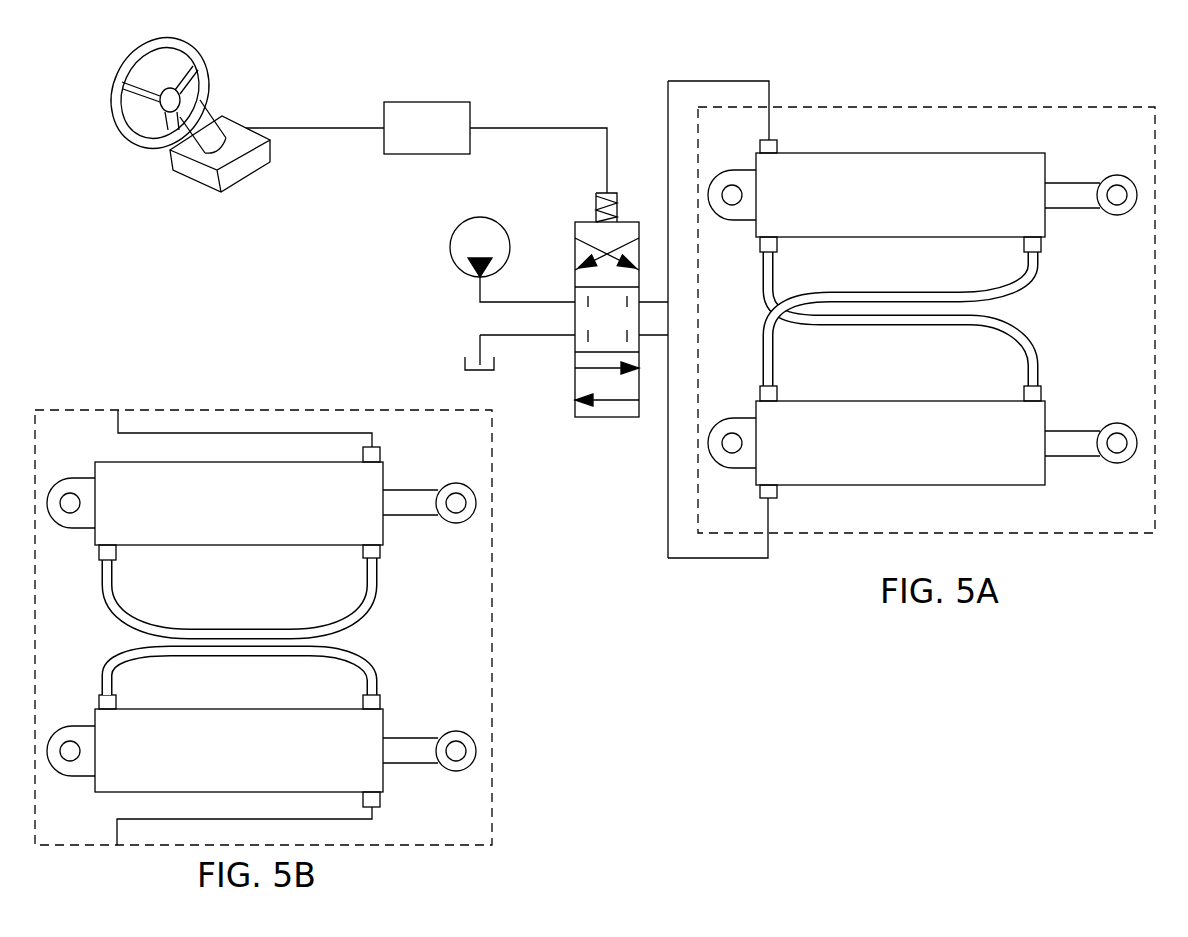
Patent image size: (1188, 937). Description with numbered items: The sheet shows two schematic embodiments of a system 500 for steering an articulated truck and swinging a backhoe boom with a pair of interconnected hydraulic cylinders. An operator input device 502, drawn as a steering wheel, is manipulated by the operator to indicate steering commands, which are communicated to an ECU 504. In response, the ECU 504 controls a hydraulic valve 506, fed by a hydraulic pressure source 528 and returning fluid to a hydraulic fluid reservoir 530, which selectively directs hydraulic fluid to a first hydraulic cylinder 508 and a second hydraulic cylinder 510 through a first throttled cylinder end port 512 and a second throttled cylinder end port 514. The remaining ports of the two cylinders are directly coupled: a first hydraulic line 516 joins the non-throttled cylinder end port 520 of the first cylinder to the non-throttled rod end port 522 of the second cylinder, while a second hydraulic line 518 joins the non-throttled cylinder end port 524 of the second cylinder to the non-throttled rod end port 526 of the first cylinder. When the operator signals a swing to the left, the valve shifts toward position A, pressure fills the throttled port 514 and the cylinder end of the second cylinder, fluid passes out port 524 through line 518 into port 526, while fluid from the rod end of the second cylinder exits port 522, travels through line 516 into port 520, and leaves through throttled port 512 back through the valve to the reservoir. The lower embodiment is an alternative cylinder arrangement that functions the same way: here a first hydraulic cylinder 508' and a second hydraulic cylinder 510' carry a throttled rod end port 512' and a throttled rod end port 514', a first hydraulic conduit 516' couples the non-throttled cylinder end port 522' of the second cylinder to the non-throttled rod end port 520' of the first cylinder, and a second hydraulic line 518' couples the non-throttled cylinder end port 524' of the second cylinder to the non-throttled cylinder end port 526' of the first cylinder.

In FIG. 5A, the system 500 is at (903, 68).
In FIG. 5A, the operator input device 502 is at (118, 122).
In FIG. 5A, the ECU 504 is at (418, 102).
In FIG. 5A, the hydraulic valve 506 is at (598, 418).
In FIG. 5A, the first hydraulic cylinder 508 is at (922, 175).
In FIG. 5A, the second hydraulic cylinder 510 is at (922, 465).
In FIG. 5A, the first throttled cylinder end port 512 is at (825, 133).
In FIG. 5A, the second throttled cylinder end port 514 is at (819, 508).
In FIG. 5A, the first hydraulic line 516 is at (900, 319).
In FIG. 5A, the second hydraulic line 518 is at (900, 317).
In FIG. 5A, the non-throttled cylinder end port 520 is at (814, 257).
In FIG. 5A, the non-throttled rod end port 522 is at (1072, 378).
In FIG. 5A, the non-throttled cylinder end port 524 is at (812, 379).
In FIG. 5A, the non-throttled rod end port 526 is at (1072, 257).
In FIG. 5A, the hydraulic pressure source 528 is at (452, 236).
In FIG. 5A, the hydraulic fluid reservoir 530 is at (465, 363).
In FIG. 5B, the first hydraulic cylinder 508' is at (261, 452).
In FIG. 5B, the second hydraulic cylinder 510' is at (261, 733).
In FIG. 5B, the throttled rod end port 512' is at (419, 447).
In FIG. 5B, the throttled rod end port 514' is at (417, 809).
In FIG. 5B, the first hydraulic conduit 516' is at (413, 591).
In FIG. 5B, the second hydraulic line 518' is at (239, 596).
In FIG. 5B, the non-throttled rod end port 520' is at (417, 567).
In FIG. 5B, the non-throttled cylinder end port 522' is at (235, 680).
In FIG. 5B, the non-throttled cylinder end port 524' is at (417, 689).
In FIG. 5B, the non-throttled cylinder end port 526' is at (150, 567).